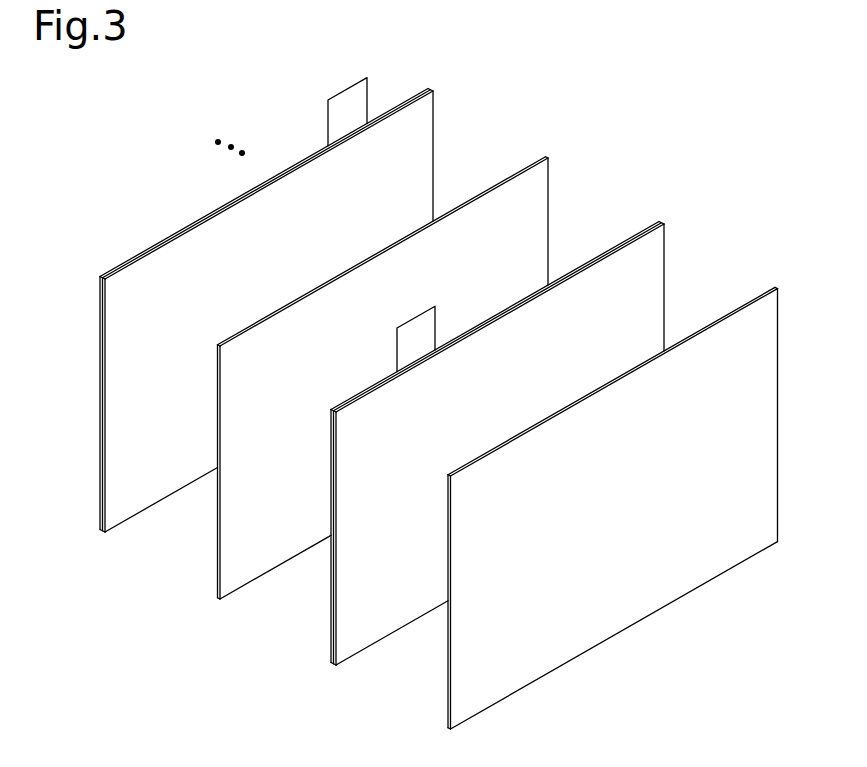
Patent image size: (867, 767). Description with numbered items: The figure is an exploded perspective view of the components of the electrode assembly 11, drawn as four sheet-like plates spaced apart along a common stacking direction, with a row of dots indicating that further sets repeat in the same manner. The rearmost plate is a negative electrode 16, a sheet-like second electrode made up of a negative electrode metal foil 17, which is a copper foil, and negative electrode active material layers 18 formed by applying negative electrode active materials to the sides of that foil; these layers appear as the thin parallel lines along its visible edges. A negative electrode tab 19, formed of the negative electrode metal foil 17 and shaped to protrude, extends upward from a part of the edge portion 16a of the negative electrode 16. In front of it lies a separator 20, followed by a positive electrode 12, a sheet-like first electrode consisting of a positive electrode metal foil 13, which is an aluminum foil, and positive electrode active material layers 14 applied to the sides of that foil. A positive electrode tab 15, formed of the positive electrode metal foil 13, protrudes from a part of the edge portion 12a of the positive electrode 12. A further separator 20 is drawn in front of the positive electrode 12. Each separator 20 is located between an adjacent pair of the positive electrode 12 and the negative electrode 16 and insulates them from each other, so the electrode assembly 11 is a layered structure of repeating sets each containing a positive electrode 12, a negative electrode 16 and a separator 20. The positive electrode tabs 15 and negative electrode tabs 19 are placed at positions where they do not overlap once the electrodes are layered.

The electrode assembly 11 is at (696, 137).
The positive electrode 12 is at (331, 647).
The edge portion 12a is at (593, 255).
The positive electrode metal foil 13 is at (331, 610).
The positive electrode active material layer 14 is at (331, 577).
The positive electrode tab 15 is at (436, 325).
The negative electrode 16 is at (100, 514).
The edge portion 16a is at (414, 96).
The negative electrode metal foil 17 is at (100, 473).
The negative electrode active material layer 18 is at (100, 426).
The negative electrode tab 19 is at (368, 97).
The separator 20 is at (217, 571).